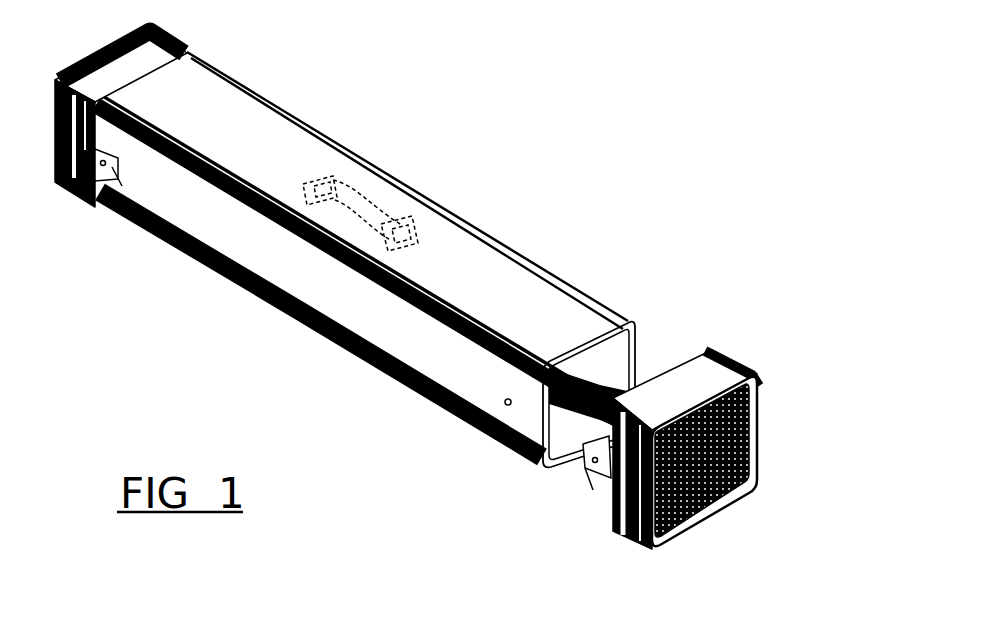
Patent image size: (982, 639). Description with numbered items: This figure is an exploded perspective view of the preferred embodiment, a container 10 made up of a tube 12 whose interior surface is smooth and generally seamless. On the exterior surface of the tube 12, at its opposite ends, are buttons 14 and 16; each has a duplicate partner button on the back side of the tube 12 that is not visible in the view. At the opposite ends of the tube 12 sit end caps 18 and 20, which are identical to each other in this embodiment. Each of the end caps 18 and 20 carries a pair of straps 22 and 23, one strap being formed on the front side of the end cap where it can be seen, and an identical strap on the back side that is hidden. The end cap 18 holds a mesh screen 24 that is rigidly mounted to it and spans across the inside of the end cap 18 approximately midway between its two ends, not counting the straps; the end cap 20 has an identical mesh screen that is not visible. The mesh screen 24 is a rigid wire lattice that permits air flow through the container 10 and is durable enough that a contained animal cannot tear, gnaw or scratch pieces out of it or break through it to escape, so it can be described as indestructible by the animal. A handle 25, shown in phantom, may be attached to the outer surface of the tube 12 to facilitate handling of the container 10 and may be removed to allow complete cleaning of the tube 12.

The container 10 is at (445, 308).
The tube 12 is at (274, 153).
The button 14 is at (508, 408).
The button 16 is at (107, 205).
The end cap 18 is at (680, 478).
The end cap 20 is at (168, 42).
The strap 22 is at (597, 472).
The strap 23 is at (137, 233).
The mesh screen 24 is at (735, 440).
The handle 25 is at (372, 193).